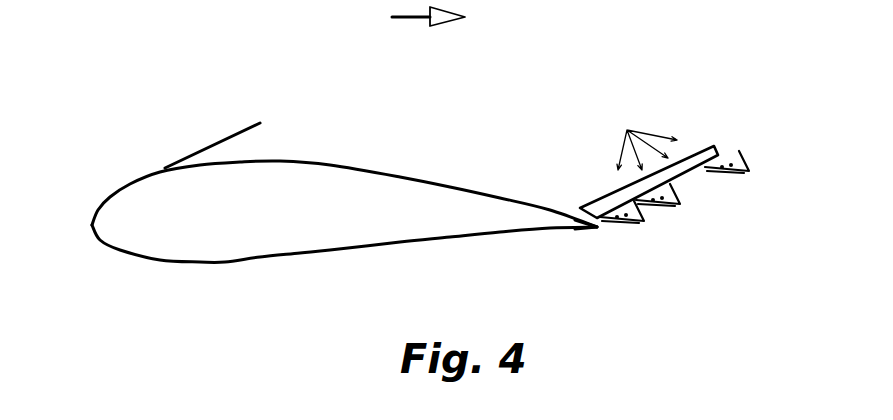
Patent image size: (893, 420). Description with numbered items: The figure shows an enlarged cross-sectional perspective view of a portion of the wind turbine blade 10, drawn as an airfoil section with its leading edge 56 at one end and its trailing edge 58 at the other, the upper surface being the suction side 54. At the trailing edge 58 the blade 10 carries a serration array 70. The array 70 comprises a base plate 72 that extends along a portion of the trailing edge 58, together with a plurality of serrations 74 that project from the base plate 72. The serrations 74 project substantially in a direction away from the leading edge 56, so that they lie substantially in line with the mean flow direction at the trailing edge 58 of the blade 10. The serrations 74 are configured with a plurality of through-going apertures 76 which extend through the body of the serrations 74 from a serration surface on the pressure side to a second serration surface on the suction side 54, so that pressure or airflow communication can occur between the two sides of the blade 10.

The wind turbine blade 10 is at (182, 85).
The suction side 54 is at (334, 166).
The leading edge 56 is at (93, 218).
The trailing edge 58 is at (603, 229).
The serration array 70 is at (589, 257).
The base plate 72 is at (713, 145).
The serrations 74 is at (742, 167).
The through-going apertures 76 is at (643, 140).